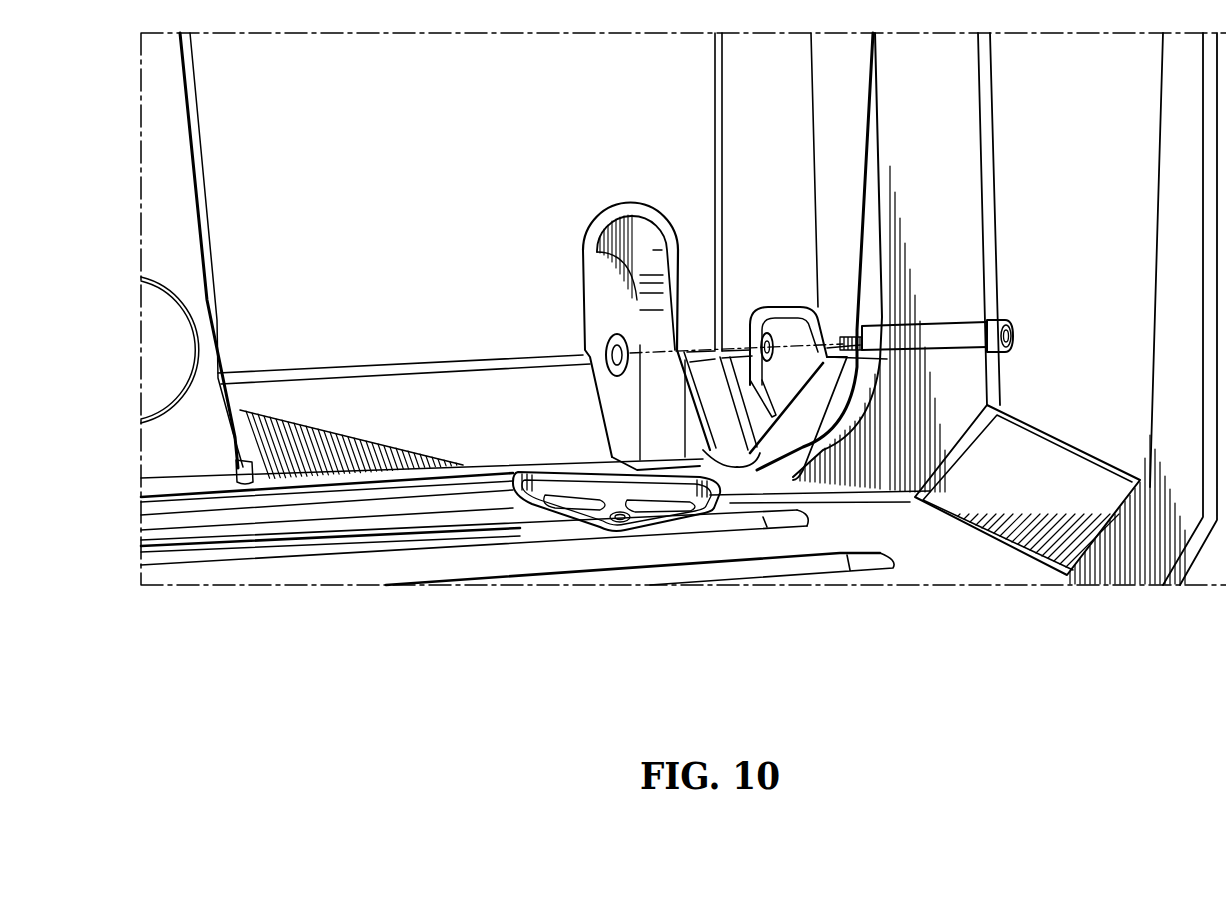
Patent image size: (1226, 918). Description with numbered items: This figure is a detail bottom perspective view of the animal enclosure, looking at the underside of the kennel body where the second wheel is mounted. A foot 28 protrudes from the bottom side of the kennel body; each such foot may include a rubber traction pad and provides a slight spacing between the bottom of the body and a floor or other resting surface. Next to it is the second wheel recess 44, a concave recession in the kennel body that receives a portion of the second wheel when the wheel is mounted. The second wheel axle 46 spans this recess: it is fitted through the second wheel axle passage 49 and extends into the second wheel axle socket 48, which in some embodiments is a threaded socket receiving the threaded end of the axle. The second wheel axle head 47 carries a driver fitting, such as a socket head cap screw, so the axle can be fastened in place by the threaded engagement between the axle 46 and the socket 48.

The foot 28 is at (520, 497).
The second wheel recess 44 is at (630, 388).
The second wheel axle 46 is at (934, 346).
The second wheel axle head 47 is at (1003, 318).
The second wheel axle socket 48 is at (622, 344).
The second wheel axle passage 49 is at (768, 330).